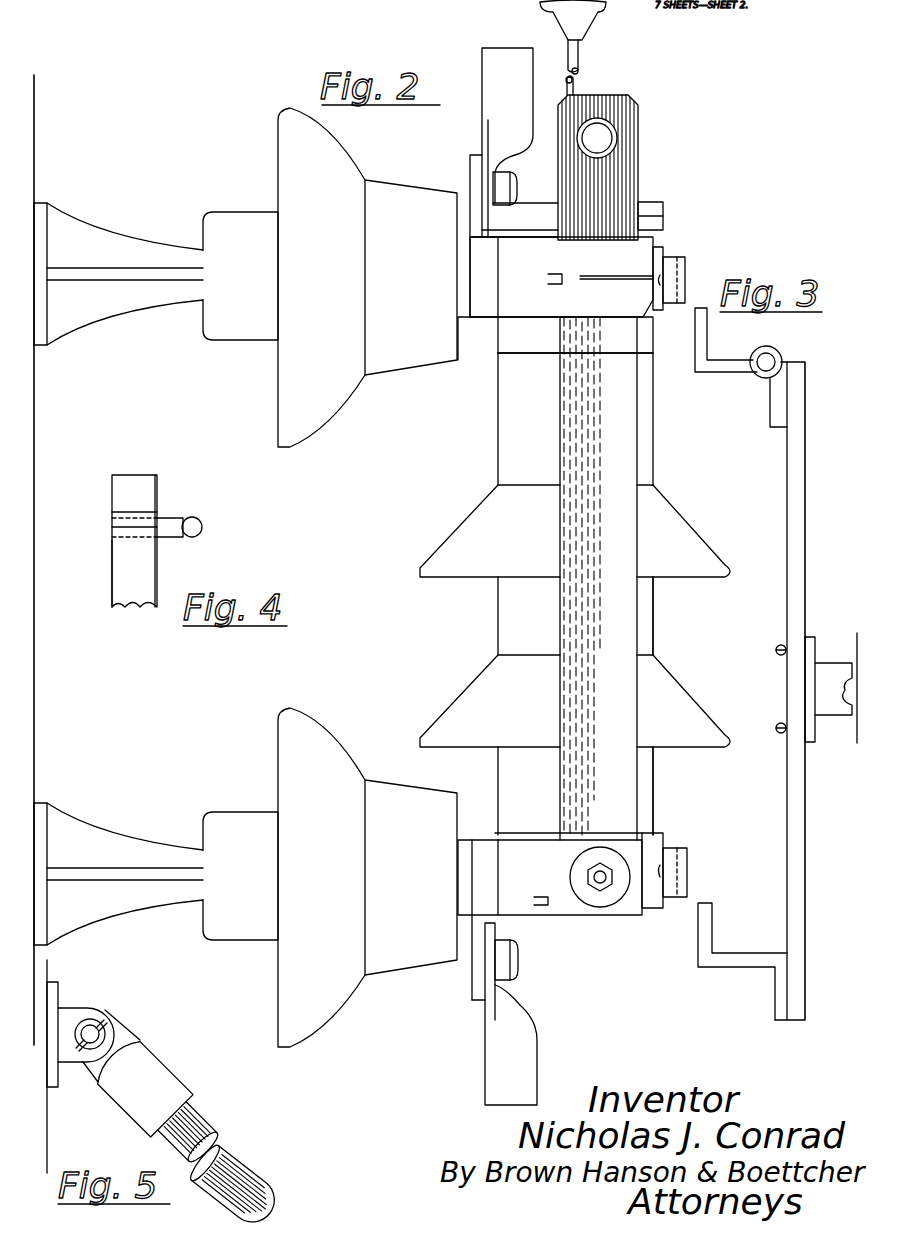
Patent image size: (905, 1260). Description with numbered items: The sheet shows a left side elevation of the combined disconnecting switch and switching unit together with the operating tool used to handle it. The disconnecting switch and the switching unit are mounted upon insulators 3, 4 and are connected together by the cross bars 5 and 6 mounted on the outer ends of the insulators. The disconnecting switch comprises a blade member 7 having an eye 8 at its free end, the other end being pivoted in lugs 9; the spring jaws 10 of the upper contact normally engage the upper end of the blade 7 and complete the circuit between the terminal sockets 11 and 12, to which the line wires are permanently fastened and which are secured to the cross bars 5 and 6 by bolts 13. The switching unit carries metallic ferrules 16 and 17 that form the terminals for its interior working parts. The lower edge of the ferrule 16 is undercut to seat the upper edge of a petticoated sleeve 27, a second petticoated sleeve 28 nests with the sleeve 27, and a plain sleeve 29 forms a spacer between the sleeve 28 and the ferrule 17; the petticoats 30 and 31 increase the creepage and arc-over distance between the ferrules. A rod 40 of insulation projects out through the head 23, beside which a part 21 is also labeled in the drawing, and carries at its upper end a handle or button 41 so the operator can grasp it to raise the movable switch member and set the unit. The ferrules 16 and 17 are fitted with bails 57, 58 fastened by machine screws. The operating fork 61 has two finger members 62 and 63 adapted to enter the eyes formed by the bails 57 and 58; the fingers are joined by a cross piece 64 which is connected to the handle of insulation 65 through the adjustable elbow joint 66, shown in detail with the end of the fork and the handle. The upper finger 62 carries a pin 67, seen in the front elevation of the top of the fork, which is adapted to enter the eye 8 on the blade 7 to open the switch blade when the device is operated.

In FIG. 2, the insulator 3 is at (285, 147).
In FIG. 2, the insulator 4 is at (285, 730).
In FIG. 2, the cross bar 5 is at (487, 270).
In FIG. 2, the cross bar 6 is at (476, 865).
In FIG. 2, the blade member 7 is at (575, 415).
In FIG. 2, the eye 8 is at (597, 140).
In FIG. 2, the lugs 9 is at (605, 915).
In FIG. 2, the spring jaws 10 is at (515, 318).
In FIG. 2, the terminal socket 11 is at (500, 52).
In FIG. 2, the terminal socket 12 is at (498, 1032).
In FIG. 2, the bolts 13 is at (497, 178).
In FIG. 2, the ferrule 16 is at (515, 345).
In FIG. 2, the ferrule 17 is at (648, 848).
In FIG. 2, the plate 21 is at (650, 222).
In FIG. 2, the head 23 is at (644, 203).
In FIG. 2, the petticoated sleeve 27 is at (510, 395).
In FIG. 2, the petticoated sleeve 28 is at (650, 620).
In FIG. 2, the plain sleeve 29 is at (645, 790).
In FIG. 2, the petticoat 30 is at (705, 495).
In FIG. 2, the petticoat 31 is at (660, 690).
In FIG. 2, the rod 40 is at (580, 58).
In FIG. 2, the handle or button 41 is at (588, 22).
In FIG. 2, the bail 57 is at (672, 266).
In FIG. 2, the bail 58 is at (677, 868).
In FIG. 3, the operating fork 61 is at (806, 558).
In FIG. 3, the finger member 62 is at (703, 340).
In FIG. 4, the finger member 62 is at (145, 468).
In FIG. 3, the finger member 63 is at (710, 932).
In FIG. 3, the cross piece 64 is at (790, 458).
In FIG. 4, the cross piece 64 is at (120, 555).
In FIG. 5, the handle of insulation 65 is at (250, 1180).
In FIG. 3, the adjustable elbow joint 66 is at (850, 656).
In FIG. 5, the adjustable elbow joint 66 is at (108, 1003).
In FIG. 3, the pin 67 is at (770, 362).
In FIG. 4, the pin 67 is at (208, 512).